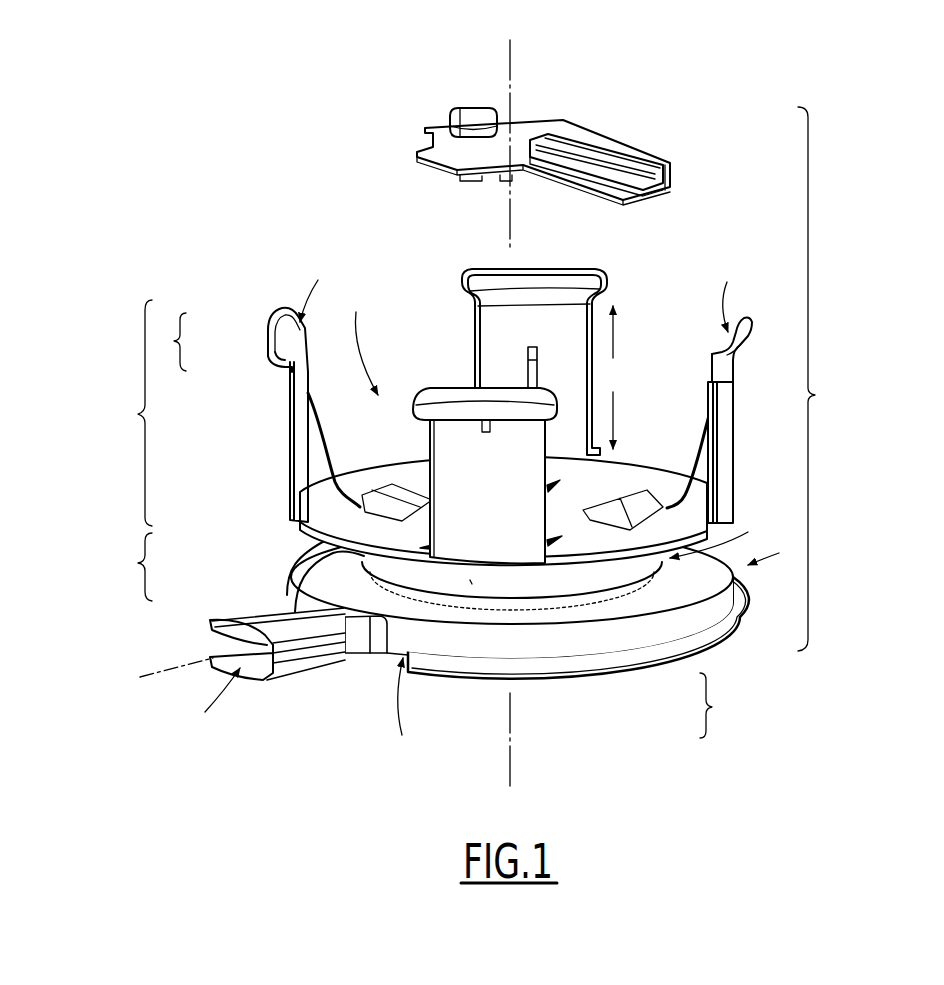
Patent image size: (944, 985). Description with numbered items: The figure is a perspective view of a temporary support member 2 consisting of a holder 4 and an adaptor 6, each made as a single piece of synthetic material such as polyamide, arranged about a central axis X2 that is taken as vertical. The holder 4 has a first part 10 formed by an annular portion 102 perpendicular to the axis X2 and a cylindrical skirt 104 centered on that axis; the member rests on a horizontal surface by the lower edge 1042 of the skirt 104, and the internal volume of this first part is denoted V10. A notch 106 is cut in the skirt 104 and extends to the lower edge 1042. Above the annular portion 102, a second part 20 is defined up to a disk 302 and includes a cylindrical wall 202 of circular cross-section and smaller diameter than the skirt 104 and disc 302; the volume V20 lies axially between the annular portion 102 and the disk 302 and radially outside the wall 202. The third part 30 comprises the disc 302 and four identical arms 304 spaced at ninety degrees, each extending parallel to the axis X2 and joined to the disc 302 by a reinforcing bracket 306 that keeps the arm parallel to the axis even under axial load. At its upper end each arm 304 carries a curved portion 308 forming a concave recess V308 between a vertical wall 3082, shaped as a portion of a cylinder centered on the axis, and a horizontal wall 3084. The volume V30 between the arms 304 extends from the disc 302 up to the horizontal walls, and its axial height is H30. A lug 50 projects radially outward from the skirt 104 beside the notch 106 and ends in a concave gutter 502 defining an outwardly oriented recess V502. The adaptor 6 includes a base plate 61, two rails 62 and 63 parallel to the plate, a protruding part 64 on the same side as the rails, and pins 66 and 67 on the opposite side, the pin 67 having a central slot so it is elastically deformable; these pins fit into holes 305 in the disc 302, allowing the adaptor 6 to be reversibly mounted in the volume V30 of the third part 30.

The support member 2 is at (470, 443).
The holder 4 is at (770, 553).
The adaptor 6 is at (674, 86).
The first part 10 is at (559, 647).
The second part 20 is at (448, 617).
The third part 30 is at (453, 513).
The lug 50 is at (223, 690).
The base plate 61 is at (528, 128).
The rail 62 is at (664, 165).
The rail 63 is at (610, 170).
The protruding part 64 is at (470, 110).
The pin 66 is at (470, 174).
The pin 67 is at (503, 174).
The annular portion 102 is at (650, 598).
The cylindrical skirt 104 is at (602, 652).
The notch 106 is at (378, 657).
The cylindrical wall 202 is at (470, 582).
The disk 302 is at (640, 480).
The arm 304 is at (490, 340).
The hole 305 is at (548, 496).
The reinforcing bracket 306 is at (313, 452).
The curved portion 308 is at (473, 405).
The concave gutter 502 is at (210, 621).
The lower edge 1042 is at (727, 651).
The vertical wall 3082 is at (270, 333).
The horizontal wall 3084 is at (278, 368).
The central axis X2 is at (510, 396).
The axial height H30 is at (616, 377).
The volume of third part V30 is at (360, 339).
The concave recess V308 is at (527, 291).
The volume of second part V20 is at (722, 532).
The internal volume V10 is at (410, 711).
The concave recess V502 is at (223, 692).